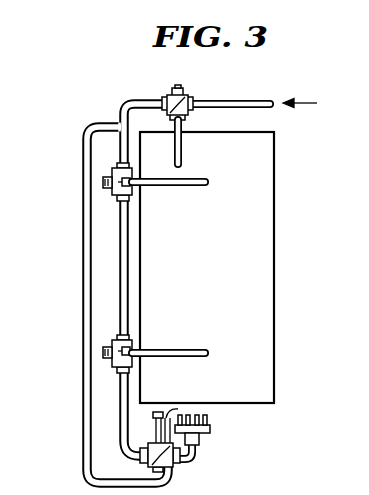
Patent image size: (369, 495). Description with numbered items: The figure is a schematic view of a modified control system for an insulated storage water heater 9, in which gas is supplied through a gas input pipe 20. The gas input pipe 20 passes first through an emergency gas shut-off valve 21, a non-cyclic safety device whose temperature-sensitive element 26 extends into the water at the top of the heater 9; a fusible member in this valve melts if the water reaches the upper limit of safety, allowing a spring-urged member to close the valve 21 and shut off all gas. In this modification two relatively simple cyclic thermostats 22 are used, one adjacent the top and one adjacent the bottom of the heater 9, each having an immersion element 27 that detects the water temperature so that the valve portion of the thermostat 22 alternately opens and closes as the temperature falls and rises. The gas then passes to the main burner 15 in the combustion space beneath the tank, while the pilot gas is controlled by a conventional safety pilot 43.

The insulated storage water heater 9 is at (282, 223).
The gas input pipe 20 is at (247, 93).
The emergency gas shut-off valve 21 is at (182, 101).
The cyclic thermostat 22 is at (117, 190).
The temperature-sensitive element 26 is at (181, 149).
The immersion element 27 is at (186, 186).
The main burner 15 is at (205, 415).
The safety pilot 43 is at (178, 460).